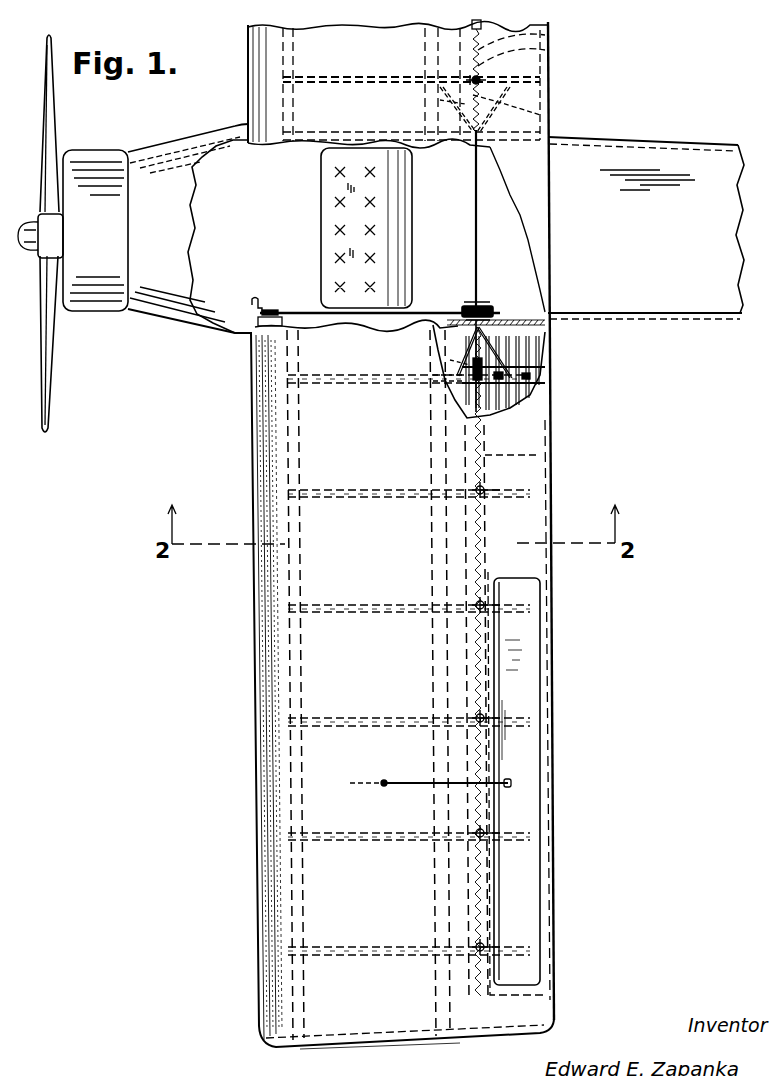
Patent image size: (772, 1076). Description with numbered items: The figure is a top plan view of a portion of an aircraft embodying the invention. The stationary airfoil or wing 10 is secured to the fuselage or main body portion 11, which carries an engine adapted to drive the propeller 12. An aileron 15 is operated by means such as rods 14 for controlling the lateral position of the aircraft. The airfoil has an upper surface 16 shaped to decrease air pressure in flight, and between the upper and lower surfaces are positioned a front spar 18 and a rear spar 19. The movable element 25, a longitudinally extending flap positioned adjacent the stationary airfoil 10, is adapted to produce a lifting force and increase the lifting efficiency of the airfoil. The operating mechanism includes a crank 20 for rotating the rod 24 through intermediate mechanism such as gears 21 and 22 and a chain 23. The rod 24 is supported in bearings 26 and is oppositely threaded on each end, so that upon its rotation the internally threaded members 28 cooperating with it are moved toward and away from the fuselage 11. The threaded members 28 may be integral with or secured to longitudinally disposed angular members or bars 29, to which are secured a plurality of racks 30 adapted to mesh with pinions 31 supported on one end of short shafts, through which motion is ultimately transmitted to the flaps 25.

The stationary airfoil 10 is at (248, 78).
The fuselage 11 is at (688, 147).
The propeller 12 is at (50, 372).
The rod 14 is at (426, 782).
The aileron 15 is at (552, 783).
The upper surface 16 is at (530, 428).
The front spar 18 is at (292, 770).
The rear spar 19 is at (452, 1046).
The crank 20 is at (261, 305).
The gear 21 is at (276, 312).
The gear 22 is at (470, 311).
The chain 23 is at (316, 305).
The rod 24 is at (474, 256).
The movable element 25 is at (548, 121).
The bearing 26 is at (468, 147).
The internally threaded member 28 is at (440, 101).
The angular member 29 is at (545, 40).
The rack 30 is at (480, 62).
The pinion 31 is at (485, 95).